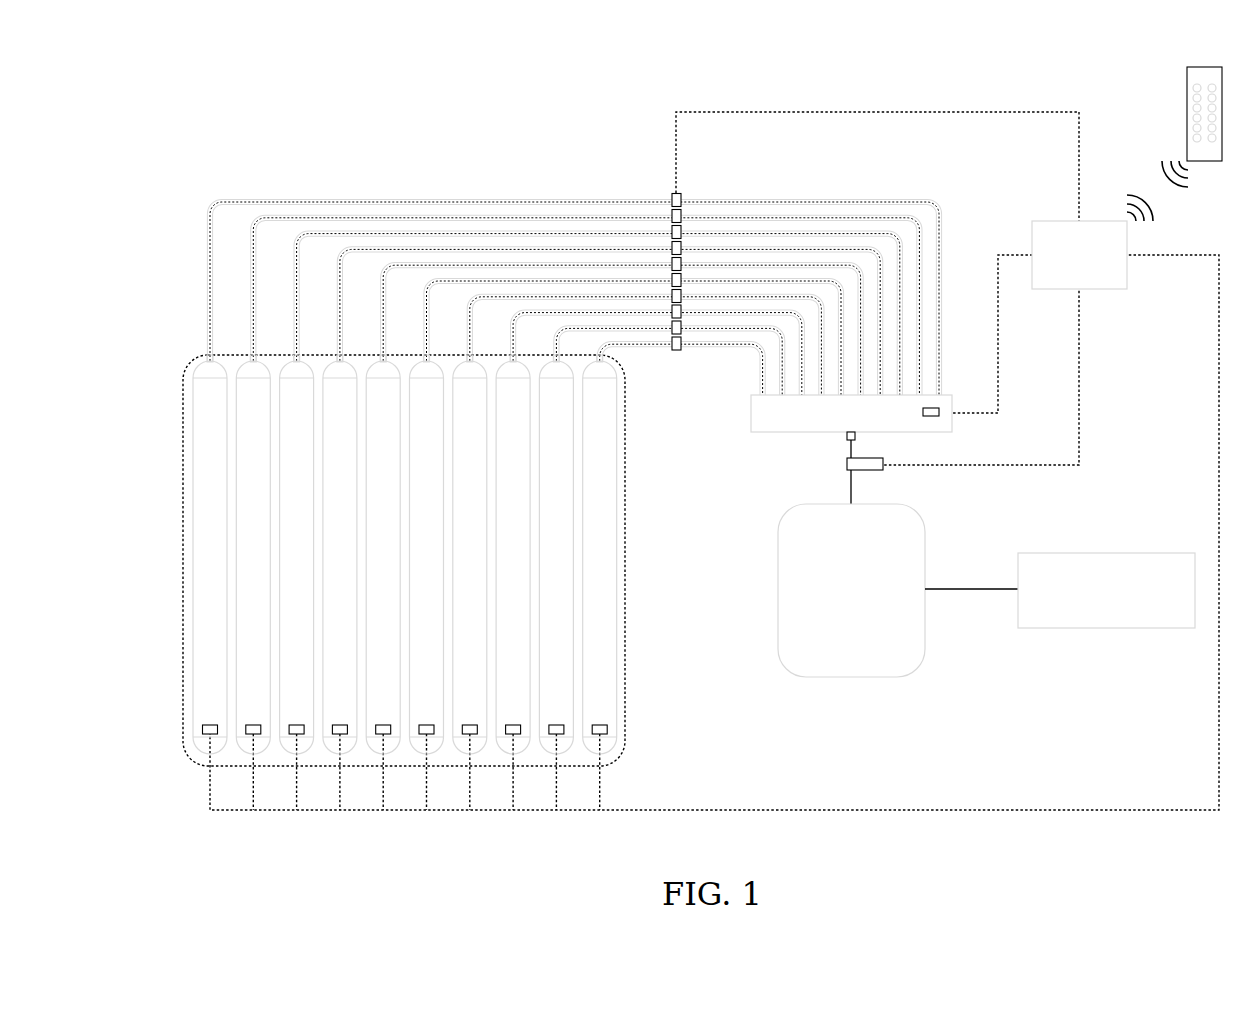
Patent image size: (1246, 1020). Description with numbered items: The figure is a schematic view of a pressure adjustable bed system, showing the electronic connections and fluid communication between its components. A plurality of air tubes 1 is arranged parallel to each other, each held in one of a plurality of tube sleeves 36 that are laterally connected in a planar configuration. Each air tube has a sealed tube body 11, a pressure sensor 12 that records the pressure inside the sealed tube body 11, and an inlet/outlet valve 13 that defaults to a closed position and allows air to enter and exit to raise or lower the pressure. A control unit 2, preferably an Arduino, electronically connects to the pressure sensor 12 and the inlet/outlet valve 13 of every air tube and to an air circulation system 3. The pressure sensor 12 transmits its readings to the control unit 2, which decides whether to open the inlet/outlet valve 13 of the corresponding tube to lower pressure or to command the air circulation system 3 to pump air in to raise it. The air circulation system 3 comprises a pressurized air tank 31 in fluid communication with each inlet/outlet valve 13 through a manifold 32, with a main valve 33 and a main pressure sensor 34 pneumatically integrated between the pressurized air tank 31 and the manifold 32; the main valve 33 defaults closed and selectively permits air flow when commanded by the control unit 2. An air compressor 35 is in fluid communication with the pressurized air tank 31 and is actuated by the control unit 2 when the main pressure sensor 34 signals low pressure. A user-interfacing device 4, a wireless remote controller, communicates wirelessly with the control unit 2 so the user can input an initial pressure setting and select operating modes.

The plurality of air tubes 1 is at (401, 559).
The control unit 2 is at (1051, 211).
The air circulation system 3 is at (945, 561).
The user-interfacing device 4 is at (1204, 64).
The sealed tube body 11 is at (193, 571).
The pressure sensor 12 is at (205, 730).
The inlet/outlet valve 13 is at (681, 197).
The pressurized air tank 31 is at (778, 597).
The manifold 32 is at (751, 415).
The main valve 33 is at (847, 462).
The main pressure sensor 34 is at (939, 416).
The air compressor 35 is at (1118, 553).
The tube sleeves 36 is at (183, 488).